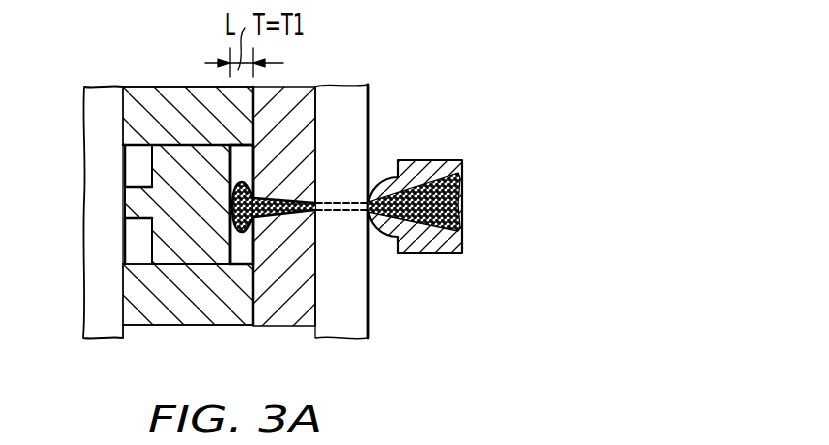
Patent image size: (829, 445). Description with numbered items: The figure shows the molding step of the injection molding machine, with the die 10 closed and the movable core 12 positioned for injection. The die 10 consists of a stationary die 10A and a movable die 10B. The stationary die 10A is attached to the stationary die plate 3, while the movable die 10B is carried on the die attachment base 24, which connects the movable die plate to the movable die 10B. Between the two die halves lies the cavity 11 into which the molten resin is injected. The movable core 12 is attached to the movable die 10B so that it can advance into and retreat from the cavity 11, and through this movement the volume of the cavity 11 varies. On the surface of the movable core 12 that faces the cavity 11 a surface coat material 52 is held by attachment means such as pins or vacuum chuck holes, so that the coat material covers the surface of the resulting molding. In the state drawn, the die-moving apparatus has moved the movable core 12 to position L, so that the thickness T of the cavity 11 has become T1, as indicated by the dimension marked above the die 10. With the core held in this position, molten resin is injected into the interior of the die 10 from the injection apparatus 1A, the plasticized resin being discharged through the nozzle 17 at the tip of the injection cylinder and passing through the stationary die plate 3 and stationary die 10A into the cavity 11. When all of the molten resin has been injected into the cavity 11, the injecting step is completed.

The die 10 is at (140, 88).
The stationary die 10A is at (302, 98).
The movable die 10B is at (185, 92).
The stationary die plate 3 is at (360, 97).
The surface coat material 52 is at (311, 148).
The movable core 12 is at (168, 172).
The die attachment base 24 is at (95, 275).
The cavity 11 is at (242, 262).
The nozzle 17 is at (387, 240).
The injection apparatus 1A is at (457, 255).